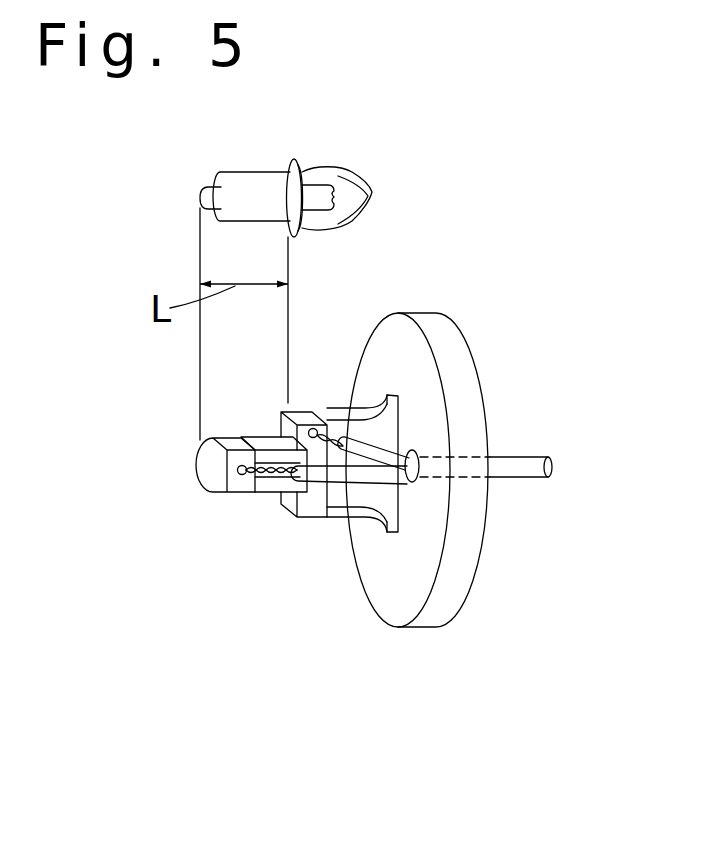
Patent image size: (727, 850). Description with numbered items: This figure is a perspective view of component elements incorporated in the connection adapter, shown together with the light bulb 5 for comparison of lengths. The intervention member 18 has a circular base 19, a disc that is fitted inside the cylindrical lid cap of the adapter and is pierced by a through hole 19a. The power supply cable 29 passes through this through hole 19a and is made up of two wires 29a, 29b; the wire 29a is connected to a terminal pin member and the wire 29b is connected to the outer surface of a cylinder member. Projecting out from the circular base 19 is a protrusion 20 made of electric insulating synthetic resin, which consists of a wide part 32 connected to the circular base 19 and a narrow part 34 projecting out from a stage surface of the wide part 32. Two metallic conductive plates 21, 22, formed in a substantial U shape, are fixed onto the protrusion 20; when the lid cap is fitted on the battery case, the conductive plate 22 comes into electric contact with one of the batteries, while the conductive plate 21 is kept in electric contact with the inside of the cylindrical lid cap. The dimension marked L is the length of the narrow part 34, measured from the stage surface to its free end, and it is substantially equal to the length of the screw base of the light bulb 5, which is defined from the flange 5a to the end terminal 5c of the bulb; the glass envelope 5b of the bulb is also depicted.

The light bulb 5 is at (308, 179).
The flange 5a is at (293, 163).
The glass envelope 5b is at (370, 180).
The end terminal 5c is at (208, 192).
The intervention member 18 is at (412, 312).
The circular base 19 is at (383, 605).
The through hole 19a is at (412, 484).
The protrusion 20 is at (229, 439).
The conductive plate 21 is at (282, 513).
The conductive plate 22 is at (203, 478).
The power supply cable 29 is at (530, 475).
The wire 29a is at (268, 482).
The wire 29b is at (337, 412).
The wide part 32 is at (343, 427).
The narrow part 34 is at (275, 449).